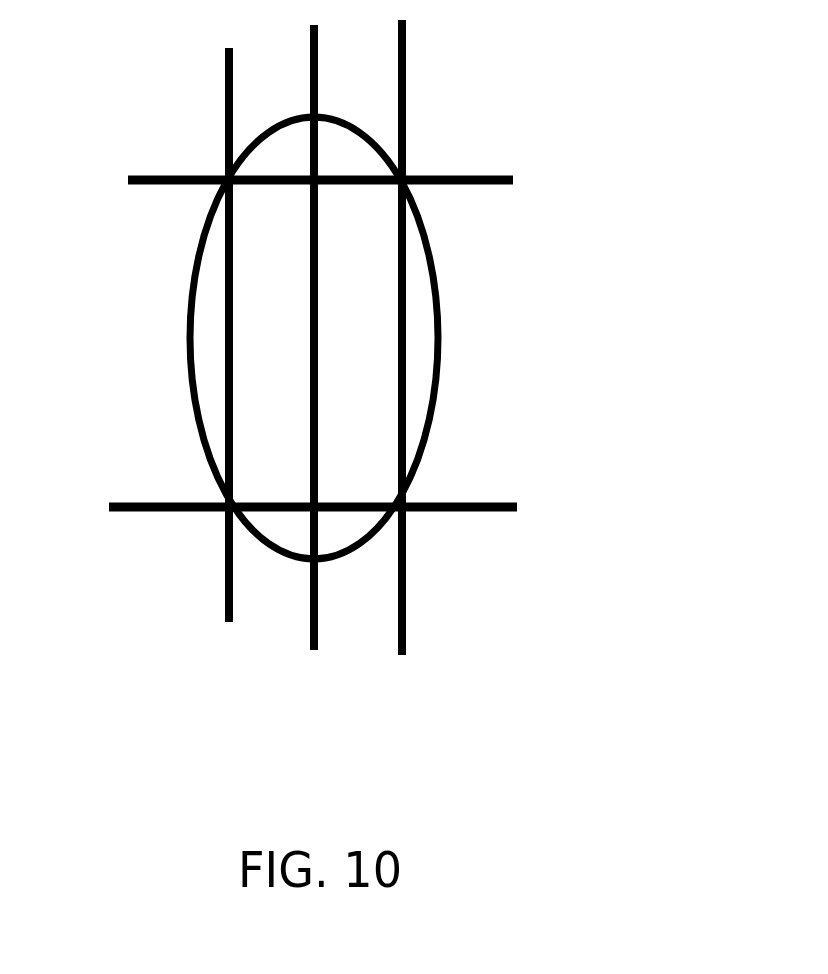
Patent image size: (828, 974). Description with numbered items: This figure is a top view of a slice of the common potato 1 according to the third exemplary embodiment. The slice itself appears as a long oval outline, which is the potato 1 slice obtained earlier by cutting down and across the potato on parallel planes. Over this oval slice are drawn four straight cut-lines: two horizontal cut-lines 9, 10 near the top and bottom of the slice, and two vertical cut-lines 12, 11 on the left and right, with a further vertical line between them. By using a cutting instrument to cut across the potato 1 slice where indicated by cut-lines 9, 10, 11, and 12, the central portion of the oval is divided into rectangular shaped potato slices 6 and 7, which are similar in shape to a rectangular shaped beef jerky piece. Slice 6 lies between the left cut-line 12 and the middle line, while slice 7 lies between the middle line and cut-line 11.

The common potato 1 is at (202, 332).
The rectangular shaped potato slice 6 is at (272, 268).
The rectangular shaped potato slice 7 is at (374, 398).
The cut-line 9 is at (465, 175).
The cut-line 10 is at (465, 508).
The cut-line 11 is at (405, 587).
The cut-line 12 is at (228, 117).